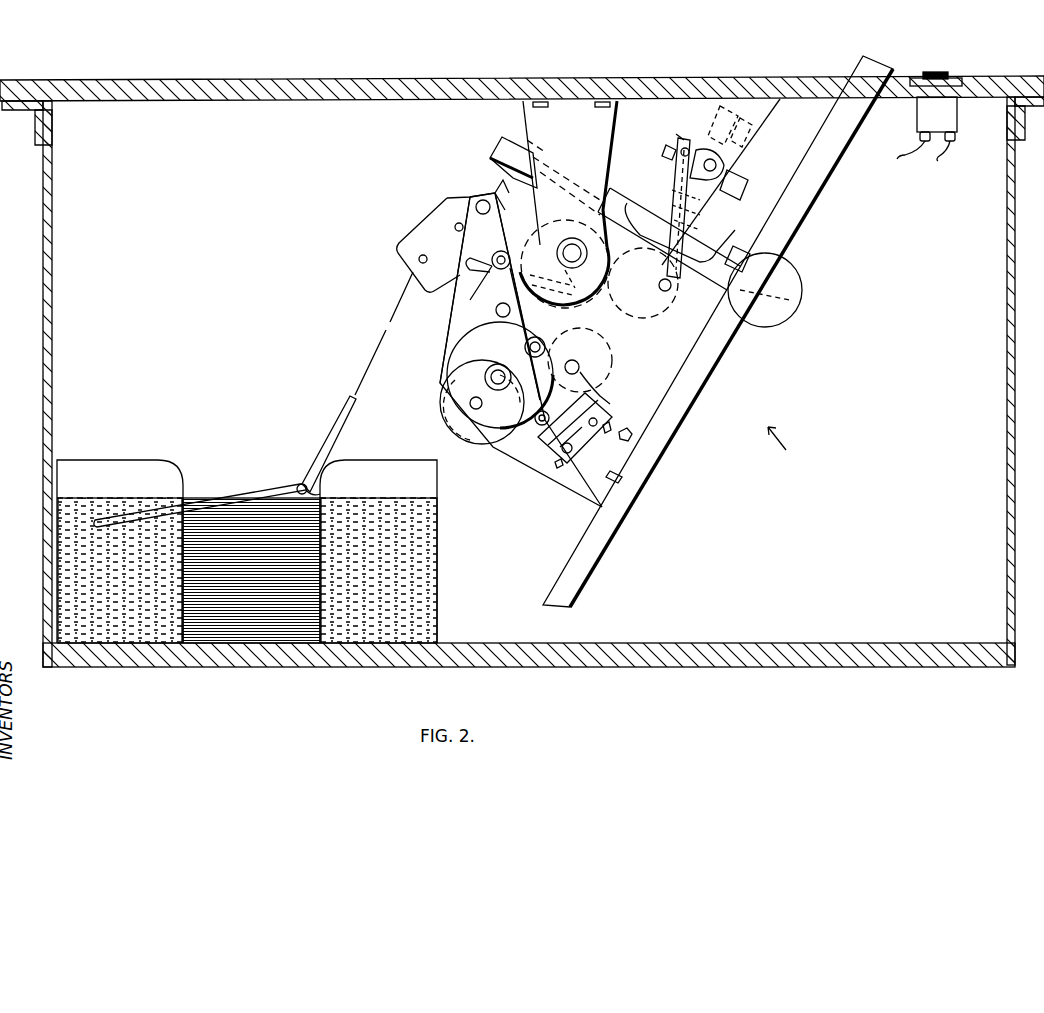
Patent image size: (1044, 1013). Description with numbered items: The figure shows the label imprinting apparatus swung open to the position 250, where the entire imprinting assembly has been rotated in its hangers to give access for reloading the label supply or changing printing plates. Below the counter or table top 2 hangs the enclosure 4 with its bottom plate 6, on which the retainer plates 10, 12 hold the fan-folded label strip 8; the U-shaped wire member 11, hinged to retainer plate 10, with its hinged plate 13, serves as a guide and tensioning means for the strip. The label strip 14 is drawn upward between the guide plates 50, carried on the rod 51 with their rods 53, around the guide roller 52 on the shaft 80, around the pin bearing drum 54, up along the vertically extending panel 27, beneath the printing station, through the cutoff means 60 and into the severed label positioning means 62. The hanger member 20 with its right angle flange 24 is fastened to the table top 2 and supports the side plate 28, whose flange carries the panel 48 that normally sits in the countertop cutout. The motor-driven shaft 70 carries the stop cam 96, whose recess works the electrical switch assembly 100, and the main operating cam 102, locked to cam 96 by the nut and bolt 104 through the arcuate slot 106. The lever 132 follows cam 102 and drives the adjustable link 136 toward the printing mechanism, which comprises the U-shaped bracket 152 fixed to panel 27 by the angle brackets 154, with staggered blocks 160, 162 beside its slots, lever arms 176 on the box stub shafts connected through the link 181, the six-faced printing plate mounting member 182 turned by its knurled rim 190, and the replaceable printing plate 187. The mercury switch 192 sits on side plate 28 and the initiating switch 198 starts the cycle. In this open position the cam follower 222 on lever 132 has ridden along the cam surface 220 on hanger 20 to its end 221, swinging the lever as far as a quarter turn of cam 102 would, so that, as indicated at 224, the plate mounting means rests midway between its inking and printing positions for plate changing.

The counter or table top 2 is at (138, 82).
The enclosure 4 is at (40, 442).
The bottom plate 6 is at (830, 644).
The fan-folded label strip 8 is at (248, 640).
The retainer plate 10 is at (136, 460).
The U-shaped wire member 11 is at (258, 486).
The retainer plate 12 is at (402, 456).
The arm 13 is at (346, 408).
The label strip 14 is at (378, 334).
The hanger member 20 is at (607, 160).
The right angle formed flange 24 is at (556, 101).
The vertically extending panel 27 is at (494, 150).
The side plate 28 is at (562, 490).
The panel 48 is at (820, 182).
The guide plates 50 is at (422, 213).
The rod 51 is at (480, 200).
The guide roller 52 is at (599, 366).
The rods 53 is at (456, 227).
The pin bearing drum 54 is at (486, 198).
The cutoff means 60 is at (758, 228).
The severed label positioning means 62 is at (798, 278).
The shaft 70 is at (485, 374).
The shaft 80 is at (603, 389).
The cam 96 is at (500, 350).
The electrical switch assembly 100 is at (566, 462).
The main operating cam 102 is at (468, 442).
The nut and bolt 104 is at (470, 403).
The arcuate slot 106 is at (528, 432).
The lever 132 is at (496, 312).
The adjustable link 136 is at (564, 271).
The U-shaped bracket 152 is at (734, 76).
The angle brackets 154 is at (714, 236).
The block 160 is at (752, 133).
The block 162 is at (723, 120).
The lever arms 176 is at (702, 140).
The link 181 is at (680, 180).
The printing plate mounting member 182 is at (666, 150).
The replaceable printing plate 187 is at (676, 136).
The knurled rim 190 is at (672, 196).
The mercury switch 192 is at (644, 366).
The initiating switch 198 is at (905, 112).
The cam surface 220 is at (570, 306).
The end of cam 221 is at (506, 247).
The cam follower 222 is at (501, 329).
The mid position of printing plate mounting means 224 is at (759, 170).
The open position 250 is at (788, 462).